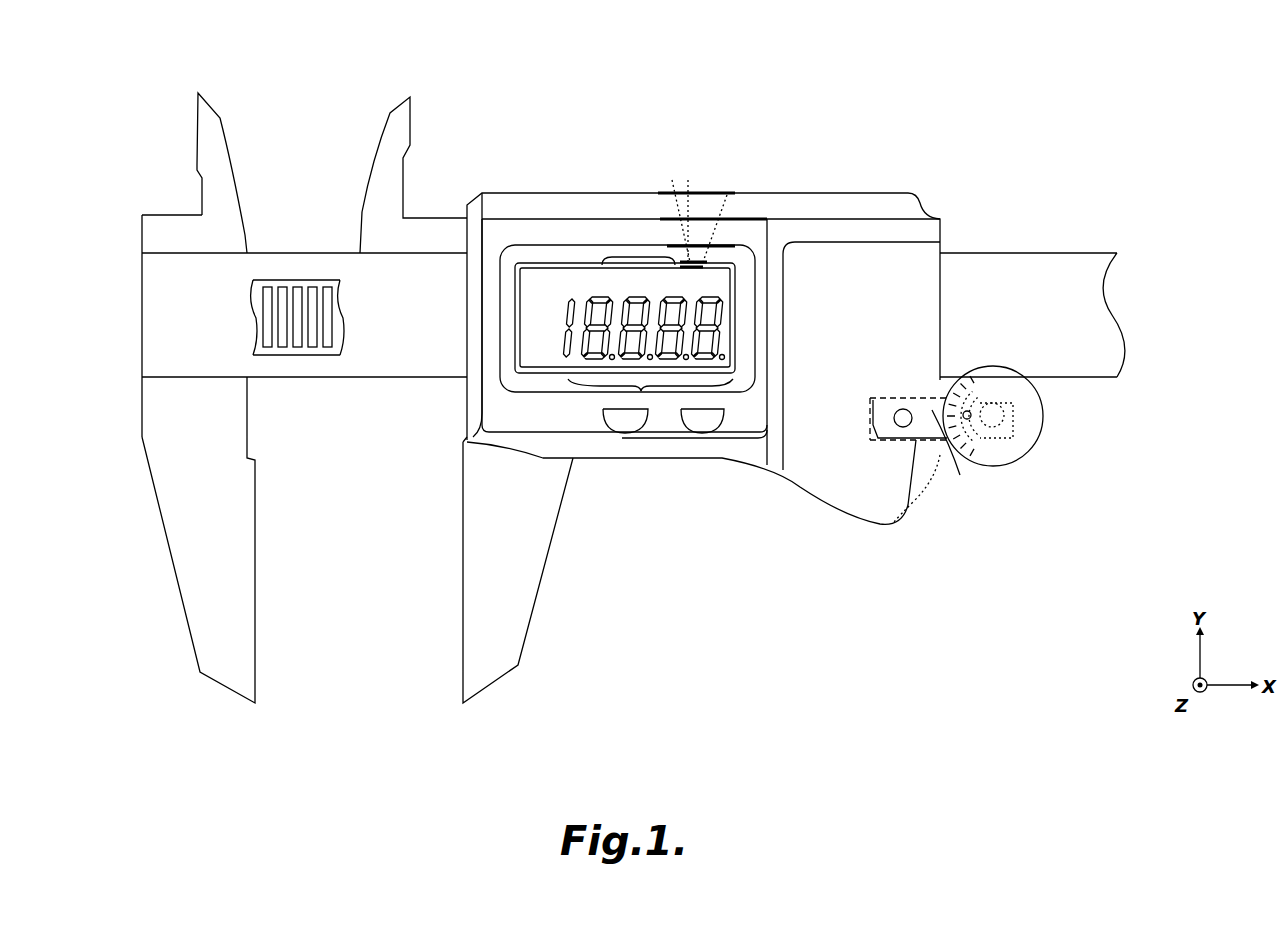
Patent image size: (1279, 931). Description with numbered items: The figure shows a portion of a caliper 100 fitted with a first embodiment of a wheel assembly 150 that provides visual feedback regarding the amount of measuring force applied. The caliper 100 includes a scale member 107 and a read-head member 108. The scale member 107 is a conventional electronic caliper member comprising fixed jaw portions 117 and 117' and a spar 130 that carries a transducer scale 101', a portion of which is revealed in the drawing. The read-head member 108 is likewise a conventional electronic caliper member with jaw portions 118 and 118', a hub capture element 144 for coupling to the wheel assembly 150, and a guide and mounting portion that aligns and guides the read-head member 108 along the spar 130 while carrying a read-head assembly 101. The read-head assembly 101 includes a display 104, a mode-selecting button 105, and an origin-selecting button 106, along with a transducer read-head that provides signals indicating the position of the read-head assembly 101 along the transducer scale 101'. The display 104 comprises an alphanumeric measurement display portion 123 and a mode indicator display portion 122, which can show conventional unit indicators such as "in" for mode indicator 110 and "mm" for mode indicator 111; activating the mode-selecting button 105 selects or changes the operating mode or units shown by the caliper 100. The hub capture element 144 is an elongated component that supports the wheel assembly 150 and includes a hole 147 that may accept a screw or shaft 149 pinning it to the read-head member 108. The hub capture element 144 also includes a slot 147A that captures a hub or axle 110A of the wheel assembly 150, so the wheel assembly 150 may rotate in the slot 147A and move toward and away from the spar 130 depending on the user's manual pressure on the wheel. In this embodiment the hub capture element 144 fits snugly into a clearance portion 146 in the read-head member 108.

The caliper 100 is at (1016, 112).
The read-head assembly 101 is at (680, 583).
The transducer scale 101' is at (303, 350).
The display 104 is at (500, 312).
The mode-selecting button 105 is at (622, 433).
The origin-selecting button 106 is at (695, 433).
The scale member 107 is at (328, 166).
The read-head member 108 is at (427, 638).
The mode indicator 110 is at (602, 288).
The hub or axle 110A is at (997, 405).
The mode indicator 111 is at (662, 263).
The fixed jaw portion 117 is at (227, 540).
The fixed jaw portion 117' is at (248, 173).
The jaw portion 118 is at (480, 570).
The jaw portion 118' is at (420, 174).
The mode indicator display portion 122 is at (665, 267).
The alphanumeric measurement display portion 123 is at (568, 392).
The spar 130 is at (142, 312).
The hub capture element 144 is at (959, 456).
The clearance portion 146 is at (868, 398).
The hole 147 is at (903, 427).
The slot 147A is at (1012, 403).
The screw or shaft 149 is at (920, 500).
The wheel assembly 150 is at (1020, 466).